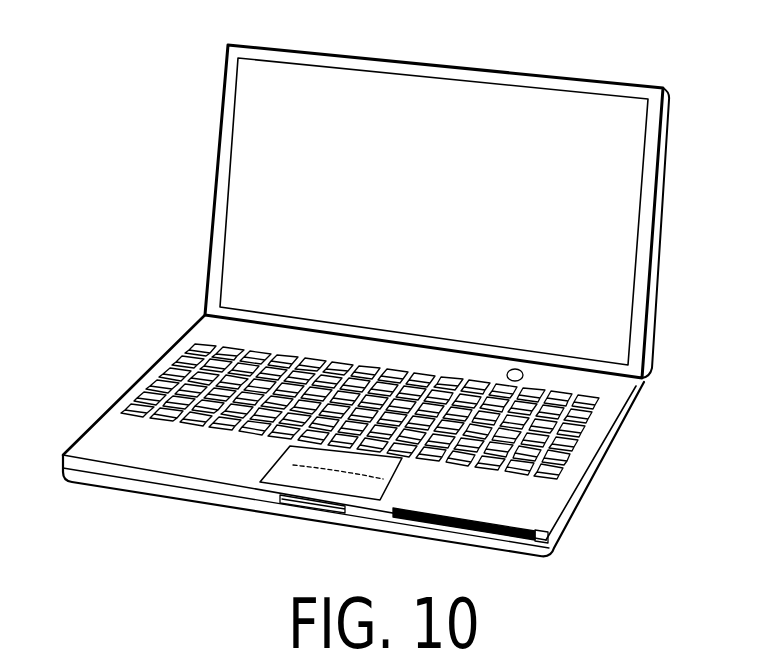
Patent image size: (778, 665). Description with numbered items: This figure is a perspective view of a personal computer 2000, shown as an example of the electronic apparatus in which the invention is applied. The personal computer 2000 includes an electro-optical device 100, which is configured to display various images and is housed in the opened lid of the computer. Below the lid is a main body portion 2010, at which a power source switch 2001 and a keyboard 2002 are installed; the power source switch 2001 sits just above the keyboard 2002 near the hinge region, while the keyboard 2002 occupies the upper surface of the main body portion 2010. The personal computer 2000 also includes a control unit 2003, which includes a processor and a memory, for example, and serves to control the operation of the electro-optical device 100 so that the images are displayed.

The electro-optical device 100 is at (536, 118).
The personal computer 2000 is at (163, 204).
The power source switch 2001 is at (523, 371).
The keyboard 2002 is at (577, 455).
The control unit 2003 is at (558, 495).
The main body portion 2010 is at (86, 434).